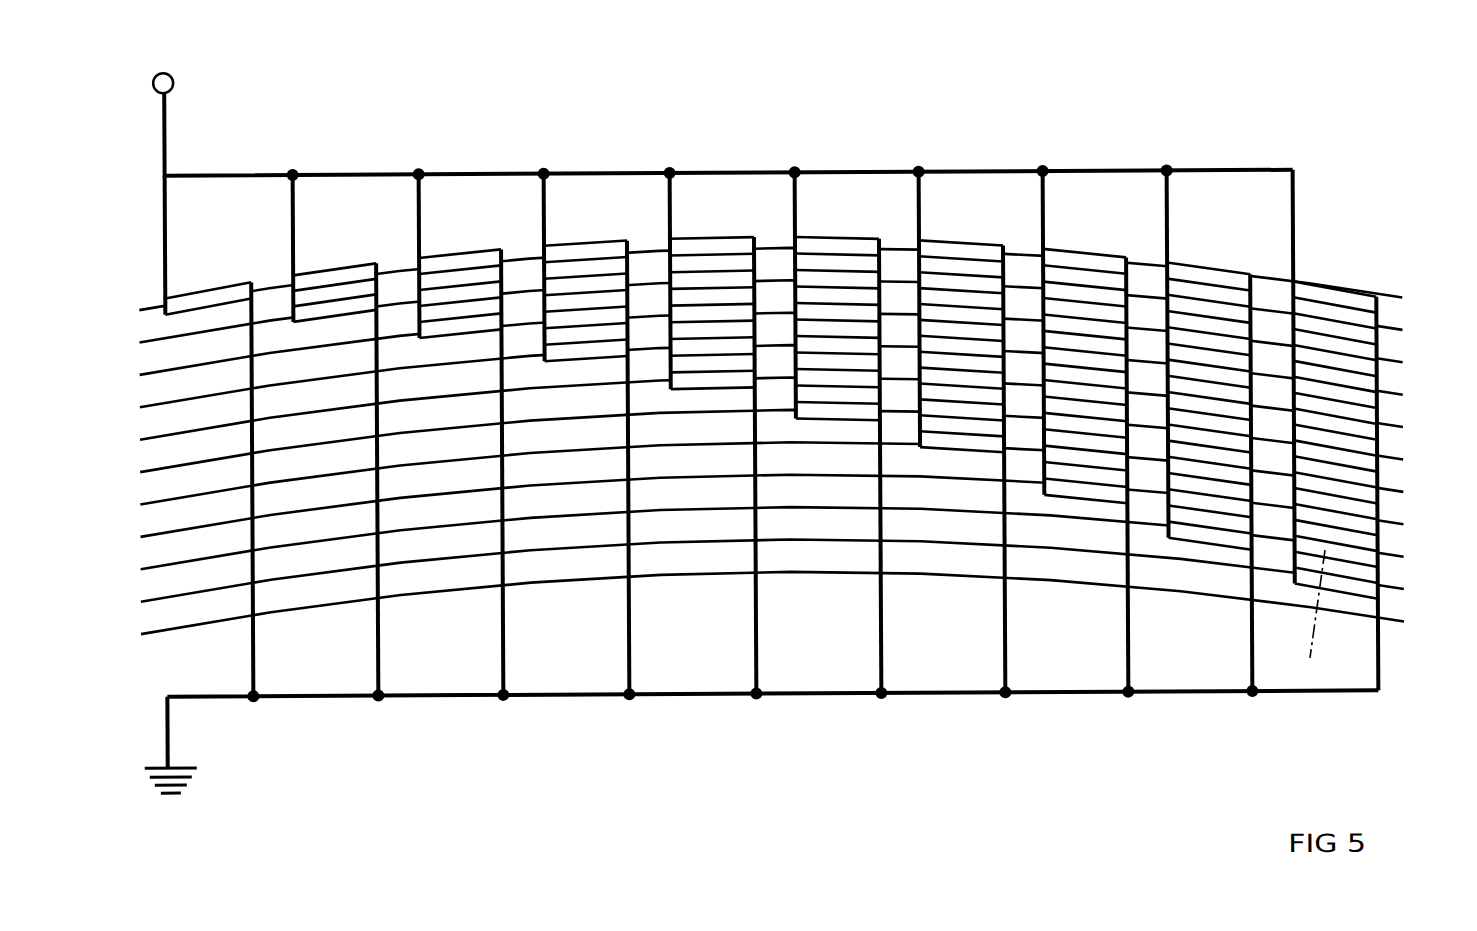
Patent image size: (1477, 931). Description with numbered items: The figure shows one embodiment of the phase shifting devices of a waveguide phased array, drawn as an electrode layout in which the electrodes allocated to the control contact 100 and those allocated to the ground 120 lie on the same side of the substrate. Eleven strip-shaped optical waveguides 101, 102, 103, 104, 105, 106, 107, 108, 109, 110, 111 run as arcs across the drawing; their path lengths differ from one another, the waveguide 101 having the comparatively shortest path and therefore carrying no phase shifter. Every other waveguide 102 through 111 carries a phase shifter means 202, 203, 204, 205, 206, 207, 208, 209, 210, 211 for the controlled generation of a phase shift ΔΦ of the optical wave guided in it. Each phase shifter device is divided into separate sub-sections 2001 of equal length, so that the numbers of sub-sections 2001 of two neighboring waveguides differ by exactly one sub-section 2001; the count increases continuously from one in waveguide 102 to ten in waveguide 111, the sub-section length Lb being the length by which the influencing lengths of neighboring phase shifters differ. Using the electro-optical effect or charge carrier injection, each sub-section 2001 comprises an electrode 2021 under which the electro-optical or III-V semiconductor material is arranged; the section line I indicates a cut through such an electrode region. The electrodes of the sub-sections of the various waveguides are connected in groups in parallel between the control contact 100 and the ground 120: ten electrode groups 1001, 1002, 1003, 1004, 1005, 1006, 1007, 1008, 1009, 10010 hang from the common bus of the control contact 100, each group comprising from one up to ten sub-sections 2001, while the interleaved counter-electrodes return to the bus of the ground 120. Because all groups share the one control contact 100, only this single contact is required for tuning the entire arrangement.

The control contact 100 is at (175, 79).
The ground 120 is at (181, 784).
The first electrode segment 1 1001 is at (214, 265).
The first electrode segment 2 1002 is at (337, 273).
The first electrode segment 3 1003 is at (457, 260).
The first electrode segment 4 1004 is at (590, 256).
The first electrode segment 5 1005 is at (732, 250).
The first electrode segment 6 1006 is at (836, 318).
The first electrode segment 7 1007 is at (958, 320).
The first electrode segment 8 1008 is at (1090, 358).
The first electrode segment 9 1009 is at (1198, 370).
The first electrode segment 10 10010 is at (1343, 402).
The sub-section 2001 is at (1079, 240).
The electrode 2021 is at (1306, 583).
The phase shifter means 202 is at (1361, 614).
The phase shifter means 203 is at (1227, 559).
The phase shifter means 204 is at (1099, 515).
The phase shifter means 205 is at (969, 470).
The phase shifter means 206 is at (847, 436).
The phase shifter means 207 is at (724, 408).
The phase shifter means 208 is at (602, 378).
The phase shifter means 209 is at (479, 355).
The phase shifter means 210 is at (350, 340).
The phase shifter means 211 is at (708, 228).
The optical waveguide 101 is at (197, 620).
The optical waveguide 102 is at (289, 576).
The optical waveguide 103 is at (426, 536).
The optical waveguide 104 is at (552, 489).
The optical waveguide 105 is at (666, 450).
The optical waveguide 106 is at (780, 412).
The optical waveguide 107 is at (655, 384).
The optical waveguide 108 is at (527, 354).
The optical waveguide 109 is at (403, 278).
The optical waveguide 110 is at (279, 287).
The optical waveguide 111 is at (264, 280).
The electrode width Lb is at (1387, 220).
The section line I- I is at (1319, 573).